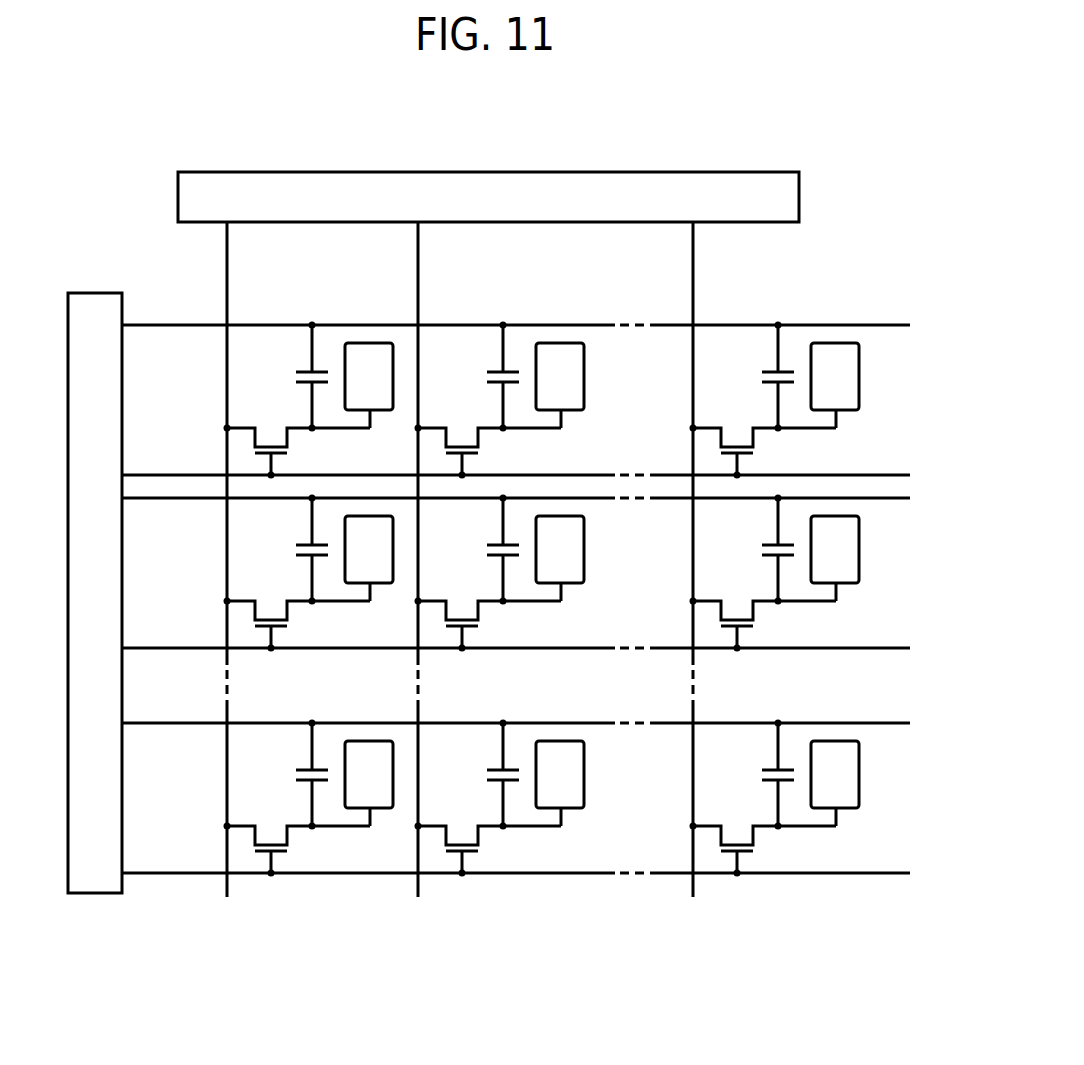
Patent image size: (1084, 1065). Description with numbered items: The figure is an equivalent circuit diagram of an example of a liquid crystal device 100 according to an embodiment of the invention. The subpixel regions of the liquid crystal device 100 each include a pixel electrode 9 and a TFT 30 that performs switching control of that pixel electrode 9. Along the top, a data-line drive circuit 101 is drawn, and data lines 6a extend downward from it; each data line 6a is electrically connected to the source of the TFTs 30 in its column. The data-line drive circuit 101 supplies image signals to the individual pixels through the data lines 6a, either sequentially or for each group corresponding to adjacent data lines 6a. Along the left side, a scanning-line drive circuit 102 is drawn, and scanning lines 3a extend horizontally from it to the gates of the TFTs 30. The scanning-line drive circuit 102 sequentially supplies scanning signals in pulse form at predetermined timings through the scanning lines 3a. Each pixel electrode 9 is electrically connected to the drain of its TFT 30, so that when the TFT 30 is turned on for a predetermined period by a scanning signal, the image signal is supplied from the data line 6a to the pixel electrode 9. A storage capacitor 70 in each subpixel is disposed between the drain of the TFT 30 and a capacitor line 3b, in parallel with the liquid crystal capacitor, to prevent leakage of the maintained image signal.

The liquid crystal device 100 is at (862, 280).
The data-line drive circuit 101 is at (178, 197).
The scanning-line drive circuit 102 is at (95, 293).
The scanning line 3a is at (212, 473).
The capacitor line 3b is at (208, 323).
The data line 6a is at (227, 316).
The pixel electrode 9 is at (370, 350).
The storage capacitor 70 is at (295, 378).
The TFT 30 is at (297, 453).